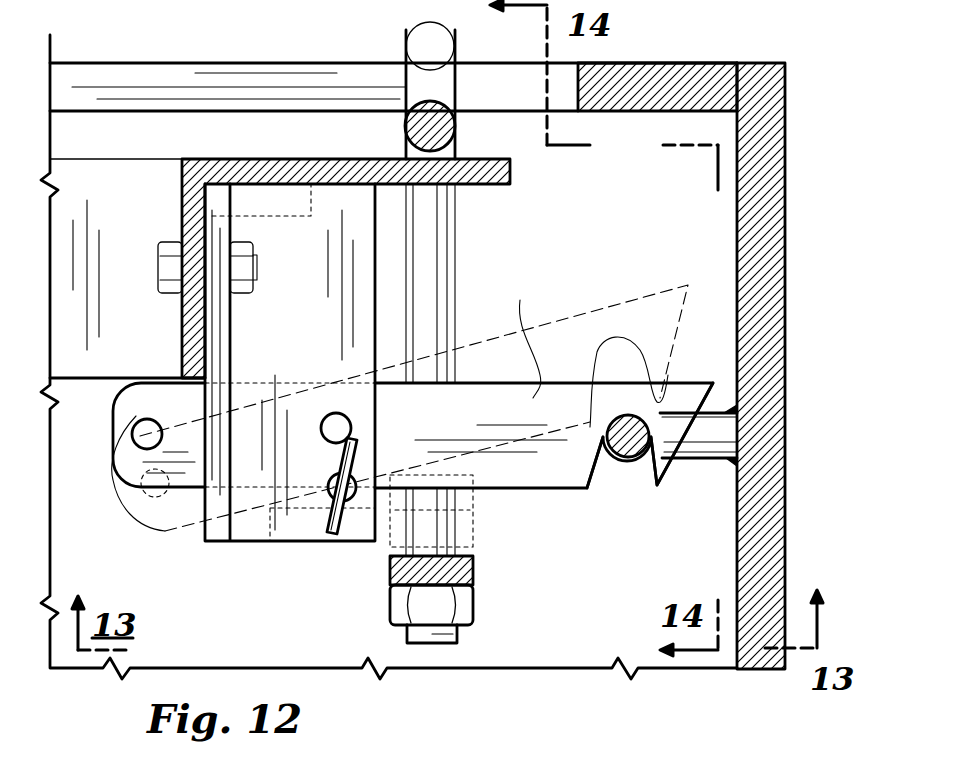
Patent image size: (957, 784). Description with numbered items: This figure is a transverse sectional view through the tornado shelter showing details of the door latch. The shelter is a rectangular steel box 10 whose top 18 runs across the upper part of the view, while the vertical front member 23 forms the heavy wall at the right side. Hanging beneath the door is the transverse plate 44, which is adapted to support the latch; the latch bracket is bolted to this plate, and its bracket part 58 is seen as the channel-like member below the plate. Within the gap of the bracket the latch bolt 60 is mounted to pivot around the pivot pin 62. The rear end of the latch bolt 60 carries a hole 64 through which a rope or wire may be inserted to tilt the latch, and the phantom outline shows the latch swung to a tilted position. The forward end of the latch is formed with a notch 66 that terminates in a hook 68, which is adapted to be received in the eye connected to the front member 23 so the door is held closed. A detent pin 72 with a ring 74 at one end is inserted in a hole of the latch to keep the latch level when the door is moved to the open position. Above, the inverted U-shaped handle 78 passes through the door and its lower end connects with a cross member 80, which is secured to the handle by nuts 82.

The rectangular shaped box 10 is at (191, 60).
The top 18 is at (106, 63).
The vertical front member 23 is at (750, 225).
The transverse plate 44 is at (190, 203).
The bracket part 58 is at (308, 331).
The latch bolt 60 is at (586, 312).
The pivot pin 62 is at (343, 424).
The hole 64 is at (134, 428).
The notch 66 is at (600, 489).
The hook 68 is at (660, 490).
The detent pin 72 is at (330, 498).
The ring 74 is at (338, 525).
The U-shaped handle 78 is at (428, 118).
The cross member 80 is at (475, 572).
The nuts 82 is at (470, 611).